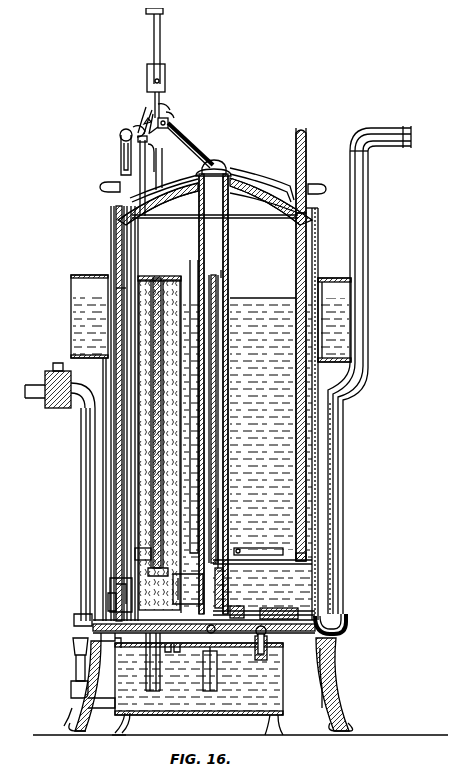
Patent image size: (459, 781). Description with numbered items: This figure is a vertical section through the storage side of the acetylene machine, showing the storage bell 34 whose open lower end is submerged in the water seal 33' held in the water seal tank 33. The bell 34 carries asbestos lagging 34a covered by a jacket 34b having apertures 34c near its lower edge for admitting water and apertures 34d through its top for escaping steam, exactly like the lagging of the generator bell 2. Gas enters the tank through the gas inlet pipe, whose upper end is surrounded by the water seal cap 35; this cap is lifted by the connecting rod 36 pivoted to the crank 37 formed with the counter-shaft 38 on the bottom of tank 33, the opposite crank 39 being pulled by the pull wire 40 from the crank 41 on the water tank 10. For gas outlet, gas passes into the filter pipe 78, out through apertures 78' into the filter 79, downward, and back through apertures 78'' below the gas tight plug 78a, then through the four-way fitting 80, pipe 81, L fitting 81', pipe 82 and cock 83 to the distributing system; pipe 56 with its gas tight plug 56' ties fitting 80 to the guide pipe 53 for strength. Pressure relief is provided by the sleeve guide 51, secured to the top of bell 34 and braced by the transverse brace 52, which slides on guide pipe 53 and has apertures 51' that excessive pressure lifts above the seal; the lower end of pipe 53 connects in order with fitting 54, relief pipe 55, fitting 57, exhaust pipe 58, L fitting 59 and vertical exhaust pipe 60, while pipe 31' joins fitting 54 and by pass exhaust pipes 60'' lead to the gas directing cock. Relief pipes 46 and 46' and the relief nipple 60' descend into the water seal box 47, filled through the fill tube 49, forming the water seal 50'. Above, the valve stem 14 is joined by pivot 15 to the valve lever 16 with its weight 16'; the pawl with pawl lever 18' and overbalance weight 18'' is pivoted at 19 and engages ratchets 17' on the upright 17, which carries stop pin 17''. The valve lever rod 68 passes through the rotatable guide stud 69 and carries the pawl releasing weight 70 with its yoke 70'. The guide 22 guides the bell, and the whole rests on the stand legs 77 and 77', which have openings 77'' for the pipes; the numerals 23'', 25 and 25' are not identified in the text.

The yoke 70' is at (139, 36).
The pawl releasing weight 70 is at (136, 90).
The apertured rotatable guide stud 69 is at (161, 115).
The valve lever rod 68 is at (160, 100).
The pawl lever 18' is at (185, 100).
The overbalance weight 18'' is at (128, 115).
The pivot 19 is at (137, 116).
The clip 23'' is at (117, 127).
The pivot 15 is at (112, 131).
The valve lever 16 is at (190, 145).
The weight 16' is at (227, 159).
The upright 17 is at (126, 176).
The ratchets 17' is at (170, 158).
The stop pin 17'' is at (174, 141).
The valve stem 14 is at (118, 198).
The cover plate 25 is at (212, 177).
The apertures 34d is at (250, 186).
The bolts 25' is at (196, 178).
The sleeve guide 51 is at (230, 391).
The guide 22 is at (298, 138).
The storage bell 34 is at (292, 258).
The bell 2 is at (298, 198).
The asbestos lagging 34a is at (299, 222).
The jacket 34b is at (305, 240).
The apertures 34c is at (127, 545).
The vertical exhaust pipe 60 is at (369, 370).
The water seal tank 33 is at (346, 508).
The crank 41 is at (109, 263).
The apertures 78' is at (112, 419).
The gas tight plug 78a is at (108, 283).
The filter pipe 78 is at (157, 434).
The filter 79 is at (150, 270).
The apertures 78'' is at (165, 558).
The water seal 33' is at (239, 448).
The connecting rod 36 is at (185, 252).
The guide pipe 53 is at (208, 267).
The water seal cap 35 is at (220, 285).
The apertures 51' is at (240, 532).
The transverse brace 52 is at (234, 542).
The pipe 31' is at (264, 587).
The crank 37 is at (192, 589).
The counter-shaft 38 is at (122, 595).
The crank 39 is at (100, 585).
The fitting 54 is at (229, 604).
The fitting 57 is at (270, 606).
The L fitting 81' is at (175, 625).
The pipe 81 is at (107, 648).
The four-way fitting 80 is at (112, 640).
The relief pipe 46 is at (199, 690).
The water seal 50' is at (154, 685).
The relief pipe 55 is at (210, 651).
The pipe 56 is at (174, 654).
The gas tight plug 56' is at (189, 654).
The exhaust pipe 58 is at (260, 636).
The L fitting 59 is at (338, 622).
The fill tube 49 is at (66, 640).
The openings 77'' is at (202, 684).
The leg 77 is at (61, 714).
The legs 77' is at (209, 735).
The by pass exhaust pipes 60'' is at (307, 668).
The relief nipple 60' is at (305, 693).
The relief pipe 46' is at (95, 751).
The water seal box 47 is at (240, 730).
The tank 10 is at (75, 298).
The pull wire 40 is at (96, 363).
The cock 83 is at (45, 369).
The pipe 82 is at (73, 431).